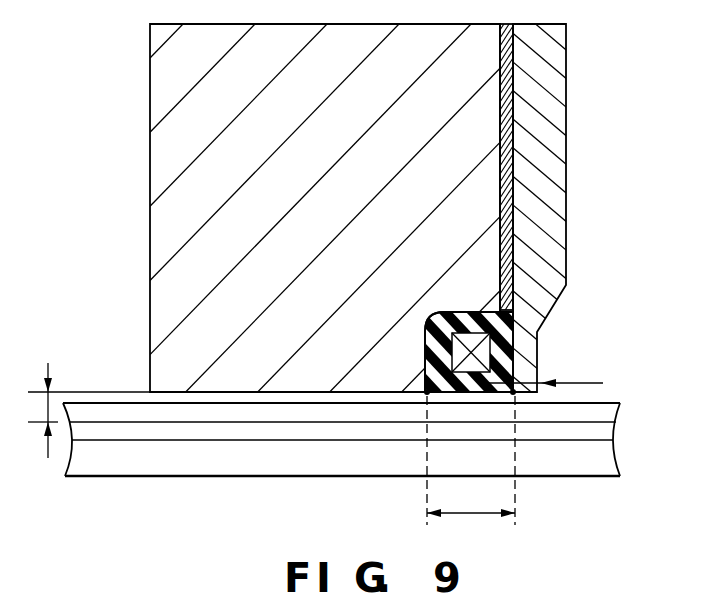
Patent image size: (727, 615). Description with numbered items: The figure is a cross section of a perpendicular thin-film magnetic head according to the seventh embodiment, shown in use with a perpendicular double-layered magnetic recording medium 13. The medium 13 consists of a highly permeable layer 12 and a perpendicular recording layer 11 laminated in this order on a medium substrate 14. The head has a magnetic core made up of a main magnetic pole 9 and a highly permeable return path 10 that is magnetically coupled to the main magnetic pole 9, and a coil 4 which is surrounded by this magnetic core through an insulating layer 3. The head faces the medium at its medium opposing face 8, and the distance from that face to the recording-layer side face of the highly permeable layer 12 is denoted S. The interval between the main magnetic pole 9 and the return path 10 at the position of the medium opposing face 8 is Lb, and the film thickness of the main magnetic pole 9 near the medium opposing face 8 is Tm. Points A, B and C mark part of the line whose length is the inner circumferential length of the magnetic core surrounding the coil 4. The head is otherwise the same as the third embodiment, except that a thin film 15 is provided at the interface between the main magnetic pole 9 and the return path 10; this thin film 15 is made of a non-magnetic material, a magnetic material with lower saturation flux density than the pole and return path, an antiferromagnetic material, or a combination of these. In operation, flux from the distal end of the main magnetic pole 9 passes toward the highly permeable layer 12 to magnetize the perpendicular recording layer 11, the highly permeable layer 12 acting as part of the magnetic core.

The insulating layer 3 is at (500, 342).
The coil 4 is at (476, 336).
The medium opposing face 8 is at (518, 396).
The main magnetic pole 9 is at (555, 148).
The highly permeable return path 10 is at (487, 71).
The perpendicular recording layer 11 is at (617, 412).
The highly permeable layer 12 is at (617, 430).
The perpendicular double-layered magnetic recording medium 13 is at (373, 413).
The medium substrate 14 is at (612, 457).
The thin film 15 is at (500, 131).
The point A is at (512, 396).
The point B is at (512, 308).
The point C is at (425, 391).
The distance S is at (87, 410).
The film thickness Tm is at (543, 374).
The interval Lb is at (471, 471).